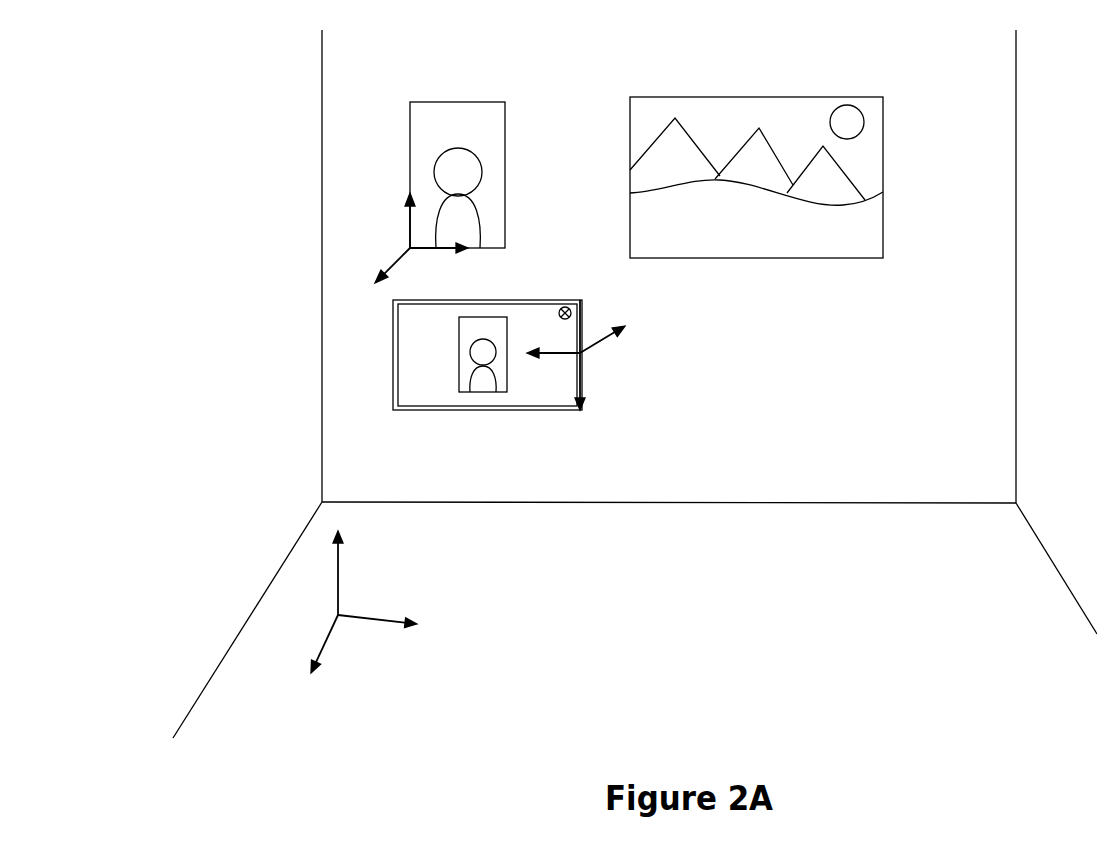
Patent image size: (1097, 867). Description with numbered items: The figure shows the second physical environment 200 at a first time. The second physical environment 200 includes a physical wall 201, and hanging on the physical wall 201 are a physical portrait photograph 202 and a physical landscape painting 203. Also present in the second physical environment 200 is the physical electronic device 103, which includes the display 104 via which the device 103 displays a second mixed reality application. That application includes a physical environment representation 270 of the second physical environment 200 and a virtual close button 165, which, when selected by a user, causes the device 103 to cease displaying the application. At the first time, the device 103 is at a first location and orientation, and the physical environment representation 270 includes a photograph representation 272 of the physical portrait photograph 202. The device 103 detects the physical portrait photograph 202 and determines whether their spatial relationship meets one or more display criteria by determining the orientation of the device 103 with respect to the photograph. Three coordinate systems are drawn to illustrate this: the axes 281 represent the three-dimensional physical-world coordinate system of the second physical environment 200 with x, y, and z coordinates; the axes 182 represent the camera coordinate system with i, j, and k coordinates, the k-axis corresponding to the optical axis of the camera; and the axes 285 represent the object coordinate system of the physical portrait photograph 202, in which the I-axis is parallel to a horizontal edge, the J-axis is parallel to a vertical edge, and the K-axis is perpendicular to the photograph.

The second physical environment 200 is at (635, 370).
The physical wall 201 is at (385, 60).
The physical portrait photograph 202 is at (446, 102).
The physical landscape painting 203 is at (717, 97).
The axes 285 is at (409, 226).
The physical electronic device 103 is at (492, 361).
The display 104 is at (502, 300).
The physical environment representation 270 is at (445, 402).
The photograph representation 272 is at (503, 392).
The virtual close button 165 is at (571, 307).
The axes 182 is at (583, 365).
The axes 281 is at (340, 572).